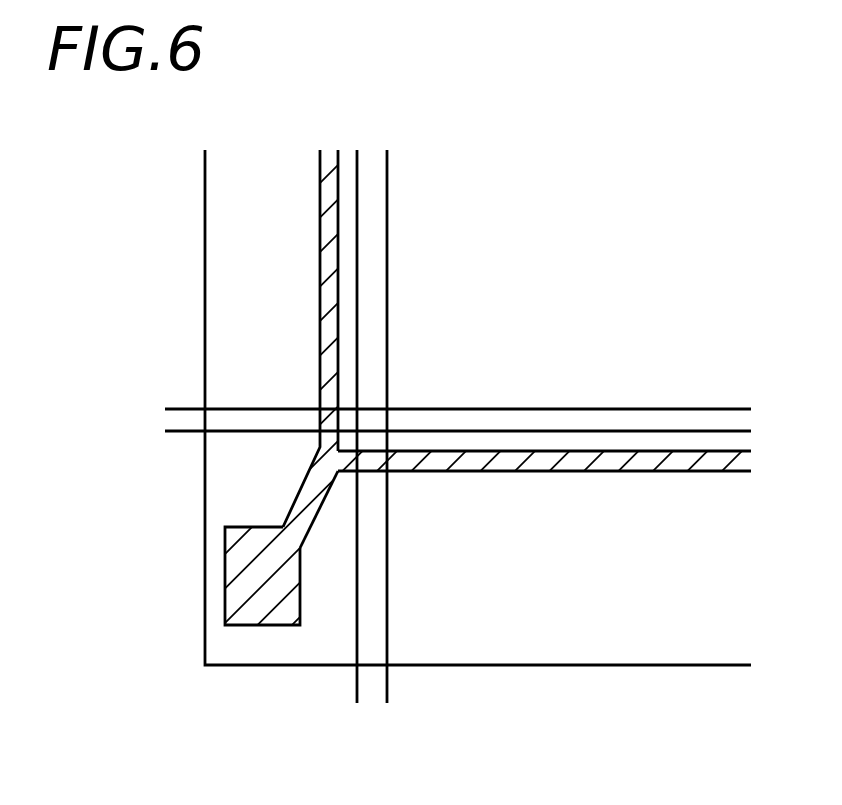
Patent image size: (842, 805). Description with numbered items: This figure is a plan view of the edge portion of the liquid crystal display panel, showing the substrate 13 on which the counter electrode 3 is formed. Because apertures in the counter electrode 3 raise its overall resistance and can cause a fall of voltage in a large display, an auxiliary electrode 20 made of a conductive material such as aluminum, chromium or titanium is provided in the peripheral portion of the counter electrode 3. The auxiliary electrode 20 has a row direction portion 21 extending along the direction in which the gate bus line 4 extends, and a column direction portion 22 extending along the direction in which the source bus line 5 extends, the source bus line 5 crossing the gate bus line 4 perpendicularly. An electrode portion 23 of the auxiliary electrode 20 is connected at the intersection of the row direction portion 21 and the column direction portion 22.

The counter electrode 3 is at (600, 270).
The gate bus line 4 is at (186, 408).
The source bus line 5 is at (387, 690).
The substrate 13 is at (658, 643).
The auxiliary electrode 20 is at (267, 613).
The row direction portion 21 is at (560, 460).
The column direction portion 22 is at (320, 232).
The electrode portion 23 is at (250, 573).